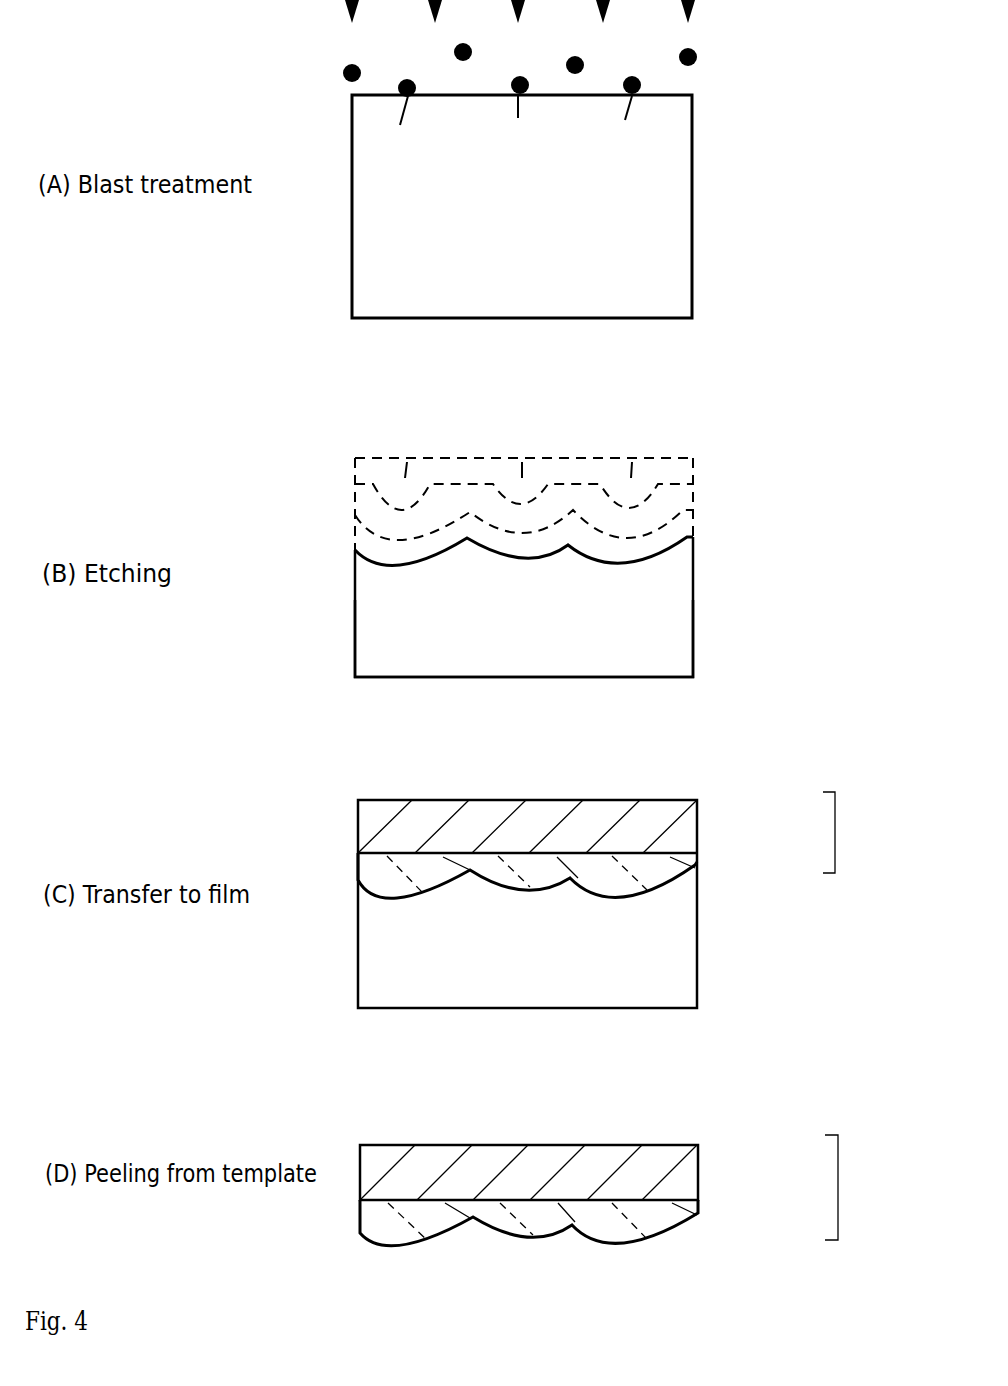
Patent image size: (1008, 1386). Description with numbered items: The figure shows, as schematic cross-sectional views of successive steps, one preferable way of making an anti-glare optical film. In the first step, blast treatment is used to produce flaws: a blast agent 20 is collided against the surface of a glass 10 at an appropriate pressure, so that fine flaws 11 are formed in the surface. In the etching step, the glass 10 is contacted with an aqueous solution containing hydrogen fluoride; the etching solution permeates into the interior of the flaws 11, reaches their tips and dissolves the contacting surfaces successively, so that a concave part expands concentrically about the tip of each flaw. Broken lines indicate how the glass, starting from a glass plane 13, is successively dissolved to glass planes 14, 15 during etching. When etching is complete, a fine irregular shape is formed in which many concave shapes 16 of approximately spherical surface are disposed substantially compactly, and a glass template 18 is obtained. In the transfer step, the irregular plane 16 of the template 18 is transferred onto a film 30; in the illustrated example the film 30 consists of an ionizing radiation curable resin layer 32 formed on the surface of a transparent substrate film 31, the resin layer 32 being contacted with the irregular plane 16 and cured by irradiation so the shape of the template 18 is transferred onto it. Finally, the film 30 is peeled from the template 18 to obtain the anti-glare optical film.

In FIG. 4A, the glass 10 is at (605, 218).
In FIG. 4B, the glass 10 is at (610, 620).
In FIG. 4A, the flaw (crack) 11 is at (518, 105).
In FIG. 4B, the flaw (crack) 11 is at (522, 467).
In FIG. 4B, the glass plane 13 is at (720, 462).
In FIG. 4B, the glass plane 14 is at (720, 490).
In FIG. 4B, the glass plane 15 is at (720, 518).
In FIG. 4B, the concave shape (irregular plane) 16 is at (658, 560).
In FIG. 4C, the concave shape (irregular plane) 16 is at (662, 893).
In FIG. 4B, the glass template 18 is at (524, 638).
In FIG. 4C, the glass template 18 is at (610, 950).
In FIG. 4A, the blast agent 20 is at (642, 83).
In FIG. 4C, the film 30 is at (622, 845).
In FIG. 4D, the film 30 is at (624, 1190).
In FIG. 4C, the transparent substrate film 31 is at (638, 832).
In FIG. 4D, the transparent substrate film 31 is at (642, 1178).
In FIG. 4C, the ionizing radiation curable resin layer 32 is at (640, 870).
In FIG. 4D, the ionizing radiation curable resin layer 32 is at (642, 1215).